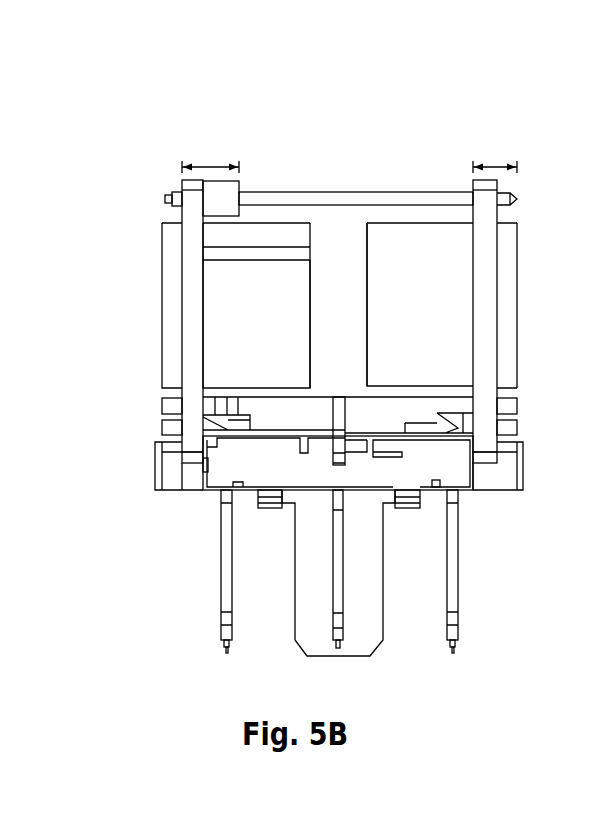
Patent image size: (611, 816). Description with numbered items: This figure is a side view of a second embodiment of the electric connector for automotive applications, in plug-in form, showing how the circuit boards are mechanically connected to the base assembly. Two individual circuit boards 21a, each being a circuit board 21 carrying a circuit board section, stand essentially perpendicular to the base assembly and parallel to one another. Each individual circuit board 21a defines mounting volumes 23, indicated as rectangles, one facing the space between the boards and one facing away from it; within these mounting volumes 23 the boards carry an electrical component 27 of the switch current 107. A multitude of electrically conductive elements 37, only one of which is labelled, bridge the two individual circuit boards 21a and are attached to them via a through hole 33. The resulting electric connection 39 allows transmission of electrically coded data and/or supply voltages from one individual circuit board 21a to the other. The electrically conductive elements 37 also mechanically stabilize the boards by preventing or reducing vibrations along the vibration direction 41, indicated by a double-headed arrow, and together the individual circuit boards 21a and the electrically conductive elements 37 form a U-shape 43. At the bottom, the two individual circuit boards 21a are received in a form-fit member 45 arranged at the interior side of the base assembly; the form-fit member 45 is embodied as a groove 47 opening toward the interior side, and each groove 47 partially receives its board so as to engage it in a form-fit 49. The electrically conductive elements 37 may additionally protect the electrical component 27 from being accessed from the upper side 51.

The upper side 51 is at (422, 83).
The U-shape 43 is at (565, 215).
The mounting volume 23 is at (172, 350).
The electrical component 27 is at (218, 250).
The switch current 107 is at (336, 233).
The electrically conductive element 37 is at (270, 196).
The electric connection 39 is at (376, 173).
The through hole 33 is at (165, 190).
The vibration direction 41 is at (205, 165).
The individual circuit board 21a is at (190, 318).
The circuit board 21 is at (486, 288).
The form-fit member 45 is at (349, 517).
The groove 47 is at (188, 470).
The form-fit 49 is at (178, 450).